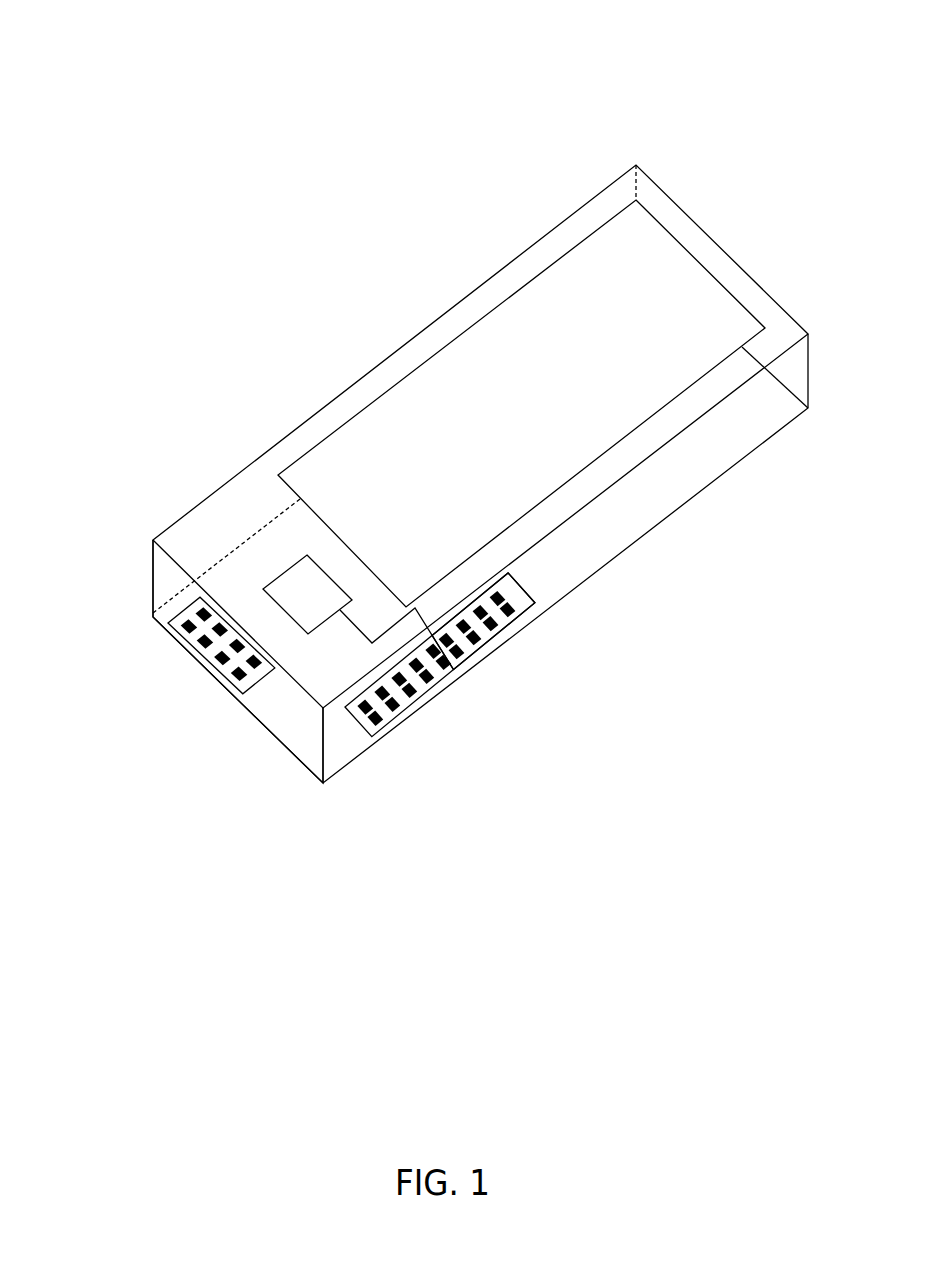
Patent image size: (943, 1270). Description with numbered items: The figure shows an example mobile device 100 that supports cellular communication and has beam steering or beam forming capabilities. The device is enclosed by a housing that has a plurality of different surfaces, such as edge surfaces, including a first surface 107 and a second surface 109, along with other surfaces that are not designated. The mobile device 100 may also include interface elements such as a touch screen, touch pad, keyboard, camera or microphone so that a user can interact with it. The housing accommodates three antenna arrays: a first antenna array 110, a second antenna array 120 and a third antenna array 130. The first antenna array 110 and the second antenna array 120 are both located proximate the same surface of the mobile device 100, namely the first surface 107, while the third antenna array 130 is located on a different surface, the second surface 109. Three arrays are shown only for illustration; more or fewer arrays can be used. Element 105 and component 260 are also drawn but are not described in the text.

The mobile device 100 is at (435, 399).
The housing top surface 105 is at (312, 405).
The first surface 107 is at (665, 500).
The second surface 109 is at (155, 620).
The first antenna array 110 is at (393, 733).
The second antenna array 120 is at (506, 646).
The third antenna array 130 is at (205, 677).
The controller chip 260 is at (295, 585).